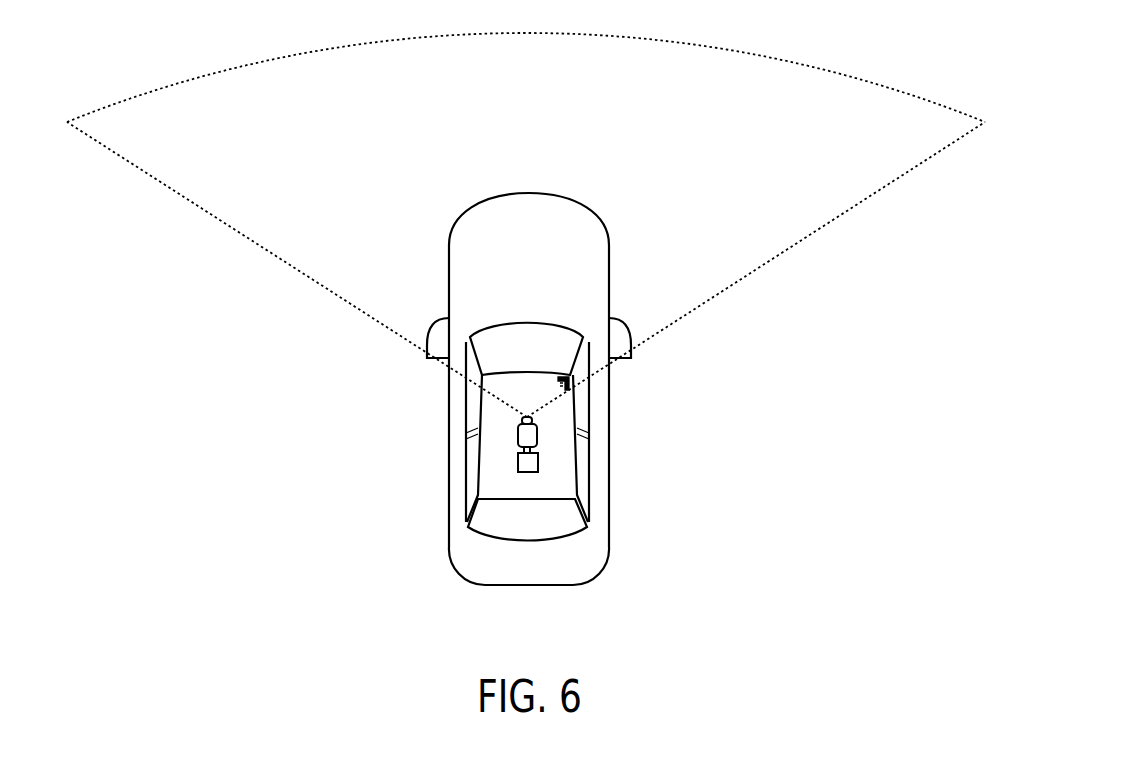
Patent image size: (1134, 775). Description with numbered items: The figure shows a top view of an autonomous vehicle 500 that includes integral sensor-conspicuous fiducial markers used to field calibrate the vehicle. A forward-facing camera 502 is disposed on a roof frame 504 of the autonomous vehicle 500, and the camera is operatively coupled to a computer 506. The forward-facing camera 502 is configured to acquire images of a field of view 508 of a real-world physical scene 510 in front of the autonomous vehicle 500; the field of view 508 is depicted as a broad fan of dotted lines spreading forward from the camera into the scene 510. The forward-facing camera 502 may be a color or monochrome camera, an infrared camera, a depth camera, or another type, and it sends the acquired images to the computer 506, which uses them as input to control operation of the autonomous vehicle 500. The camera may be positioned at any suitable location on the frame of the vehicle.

The autonomous vehicle 500 is at (426, 392).
The forward-facing camera 502 is at (518, 438).
The roof frame 504 is at (563, 442).
The computer 506 is at (518, 463).
The field of view 508 is at (789, 248).
The real-world physical scene 510 is at (528, 114).